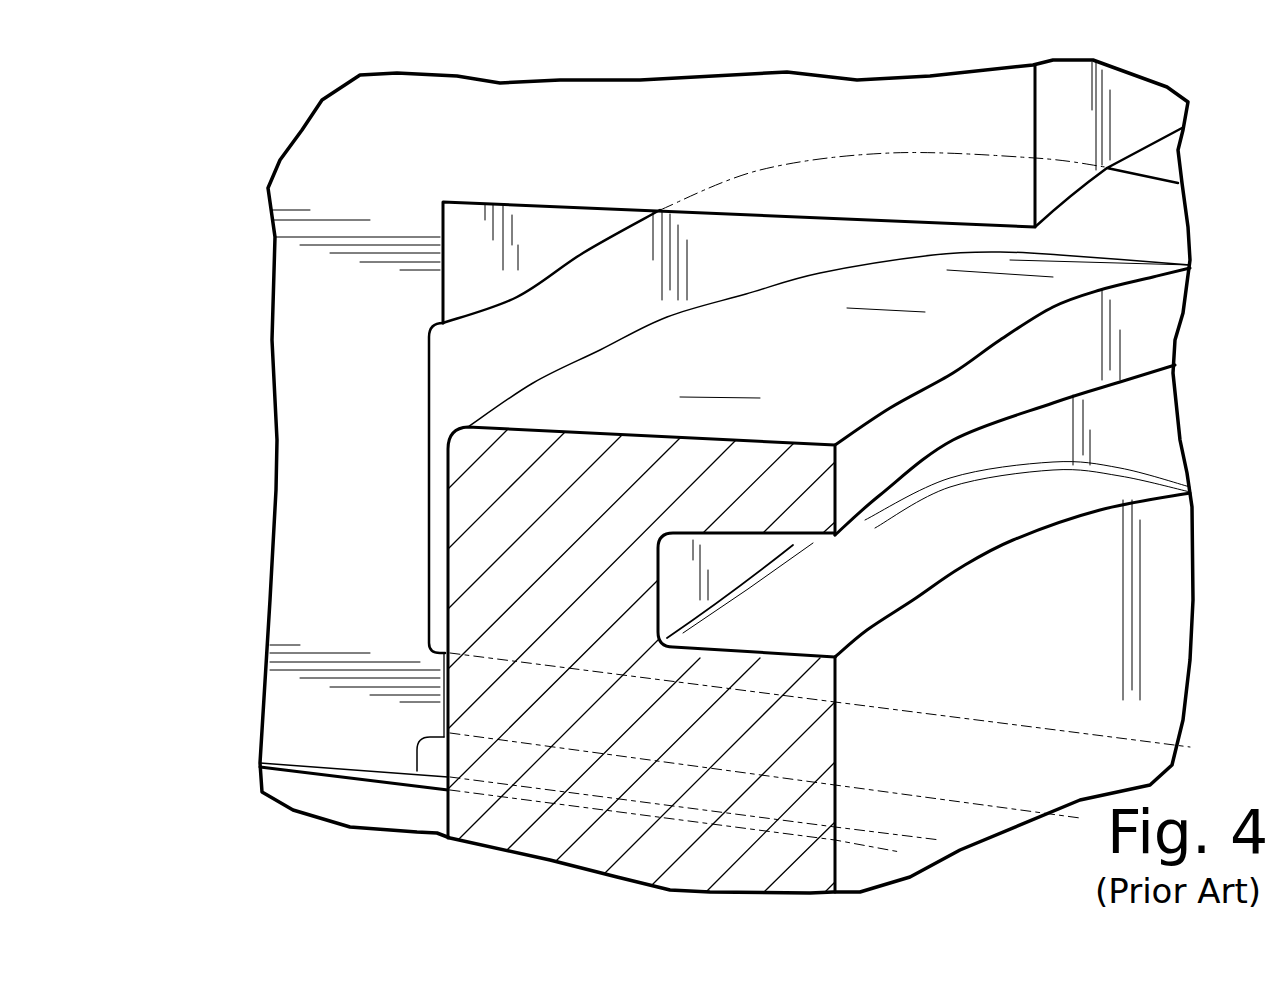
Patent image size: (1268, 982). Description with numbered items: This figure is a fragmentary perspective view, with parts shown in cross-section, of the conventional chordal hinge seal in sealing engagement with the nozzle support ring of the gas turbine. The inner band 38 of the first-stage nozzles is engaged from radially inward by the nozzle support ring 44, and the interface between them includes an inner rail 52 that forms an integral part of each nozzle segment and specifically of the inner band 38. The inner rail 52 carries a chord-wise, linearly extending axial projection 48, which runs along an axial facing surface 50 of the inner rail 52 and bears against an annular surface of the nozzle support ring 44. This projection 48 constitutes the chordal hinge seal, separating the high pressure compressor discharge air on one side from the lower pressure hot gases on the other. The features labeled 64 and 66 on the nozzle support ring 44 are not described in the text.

The inner band 38 is at (353, 117).
The nozzle support ring 44 is at (547, 842).
The axial projection 48 is at (435, 715).
The axial facing surface 50 is at (445, 355).
The inner rail 52 is at (328, 470).
The curved top surface 64 is at (738, 387).
The chamfered wedge 66 is at (1087, 183).